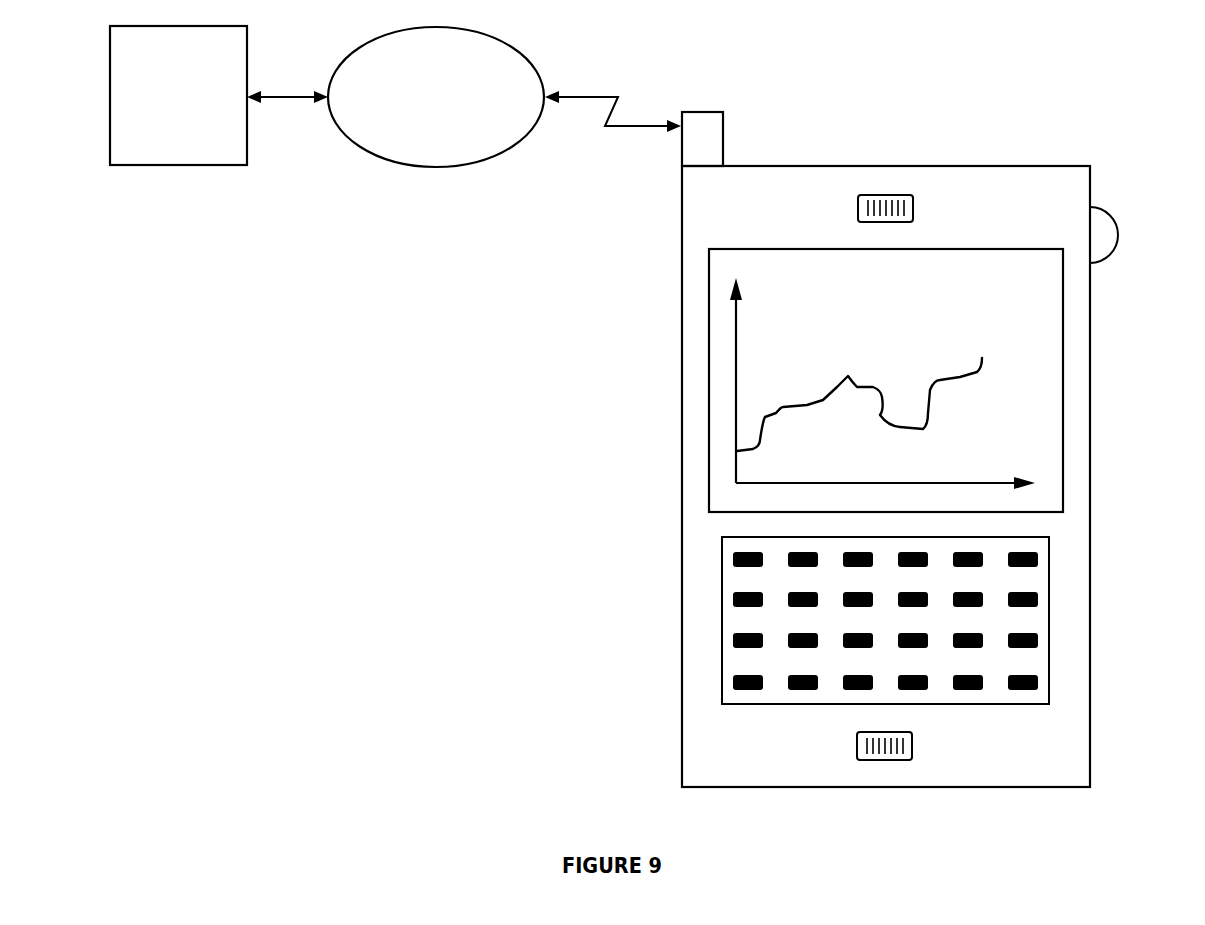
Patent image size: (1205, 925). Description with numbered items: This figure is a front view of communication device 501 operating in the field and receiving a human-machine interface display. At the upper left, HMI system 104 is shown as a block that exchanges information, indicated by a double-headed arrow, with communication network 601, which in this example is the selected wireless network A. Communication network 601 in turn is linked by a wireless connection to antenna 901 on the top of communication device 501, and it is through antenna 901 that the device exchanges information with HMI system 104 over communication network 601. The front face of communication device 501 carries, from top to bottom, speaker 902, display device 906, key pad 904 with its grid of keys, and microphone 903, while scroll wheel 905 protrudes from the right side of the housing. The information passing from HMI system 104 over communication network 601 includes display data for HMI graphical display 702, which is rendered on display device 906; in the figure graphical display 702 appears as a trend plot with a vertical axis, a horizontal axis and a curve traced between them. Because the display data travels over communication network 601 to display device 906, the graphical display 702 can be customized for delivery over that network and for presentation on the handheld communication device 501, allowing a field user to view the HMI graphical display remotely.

The HMI system 104 is at (178, 95).
The communication network 601 is at (436, 97).
The communication device 501 is at (1127, 118).
The antenna 901 is at (717, 112).
The speaker 902 is at (913, 208).
The microphone 903 is at (912, 748).
The key pad 904 is at (790, 705).
The scroll wheel 905 is at (1108, 218).
The display device 906 is at (818, 249).
The graphical display 702 is at (970, 309).